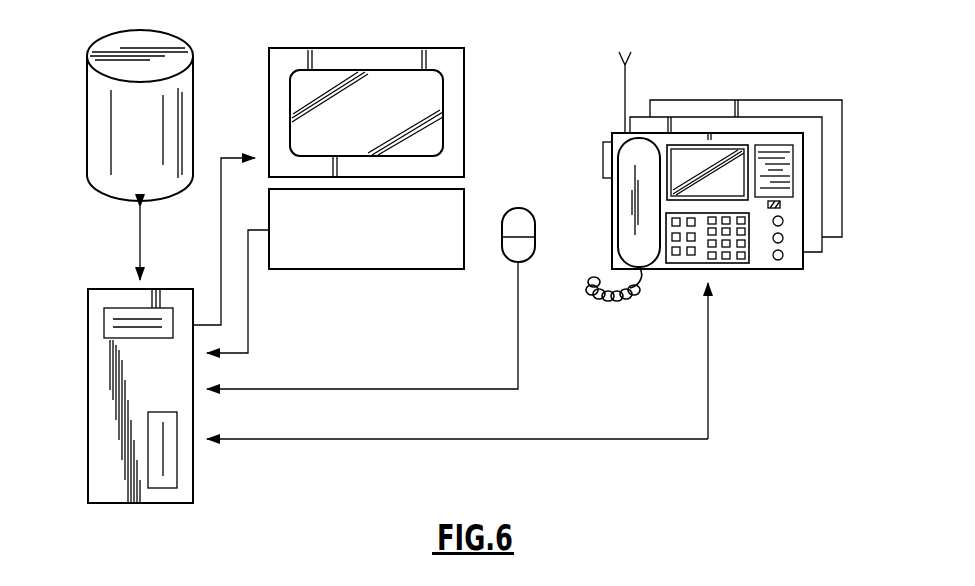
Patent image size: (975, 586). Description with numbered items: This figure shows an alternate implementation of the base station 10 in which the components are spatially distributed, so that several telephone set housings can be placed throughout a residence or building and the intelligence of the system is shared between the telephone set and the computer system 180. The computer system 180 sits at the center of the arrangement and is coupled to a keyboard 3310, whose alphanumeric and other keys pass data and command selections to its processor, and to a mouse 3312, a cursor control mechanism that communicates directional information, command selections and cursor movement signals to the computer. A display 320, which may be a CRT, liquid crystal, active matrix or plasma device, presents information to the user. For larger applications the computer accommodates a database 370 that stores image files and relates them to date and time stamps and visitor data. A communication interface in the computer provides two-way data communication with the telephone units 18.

The base station 10 is at (876, 50).
The telephone units 18 is at (766, 132).
The computer system 180 is at (107, 392).
The display 320 is at (425, 137).
The database 370 is at (107, 147).
The keyboard 3310 is at (306, 257).
The mouse 3312 is at (498, 268).